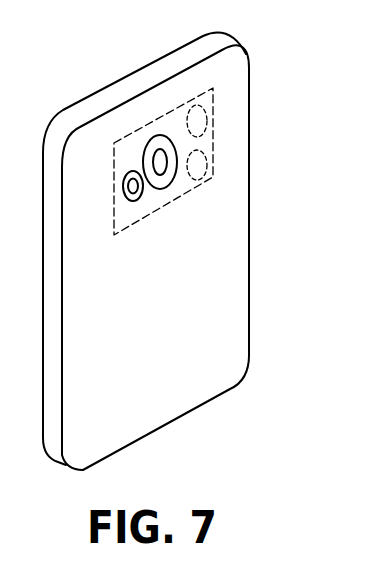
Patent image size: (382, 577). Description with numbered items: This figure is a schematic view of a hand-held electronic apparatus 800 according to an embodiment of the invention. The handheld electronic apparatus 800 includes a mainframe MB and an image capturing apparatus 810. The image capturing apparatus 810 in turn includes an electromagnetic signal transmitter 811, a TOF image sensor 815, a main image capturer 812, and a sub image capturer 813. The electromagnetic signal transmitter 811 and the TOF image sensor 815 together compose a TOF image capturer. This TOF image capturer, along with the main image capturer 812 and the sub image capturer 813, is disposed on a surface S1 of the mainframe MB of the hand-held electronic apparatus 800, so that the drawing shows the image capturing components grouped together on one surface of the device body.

The hand-held electronic apparatus 800 is at (202, 240).
The mainframe MB is at (190, 240).
The surface S1 is at (224, 303).
The image capturing apparatus 810 is at (213, 173).
The electromagnetic signal transmitter 811 is at (207, 121).
The TOF image sensor 815 is at (207, 165).
The main image capturer 812 is at (164, 192).
The sub image capturer 813 is at (132, 202).